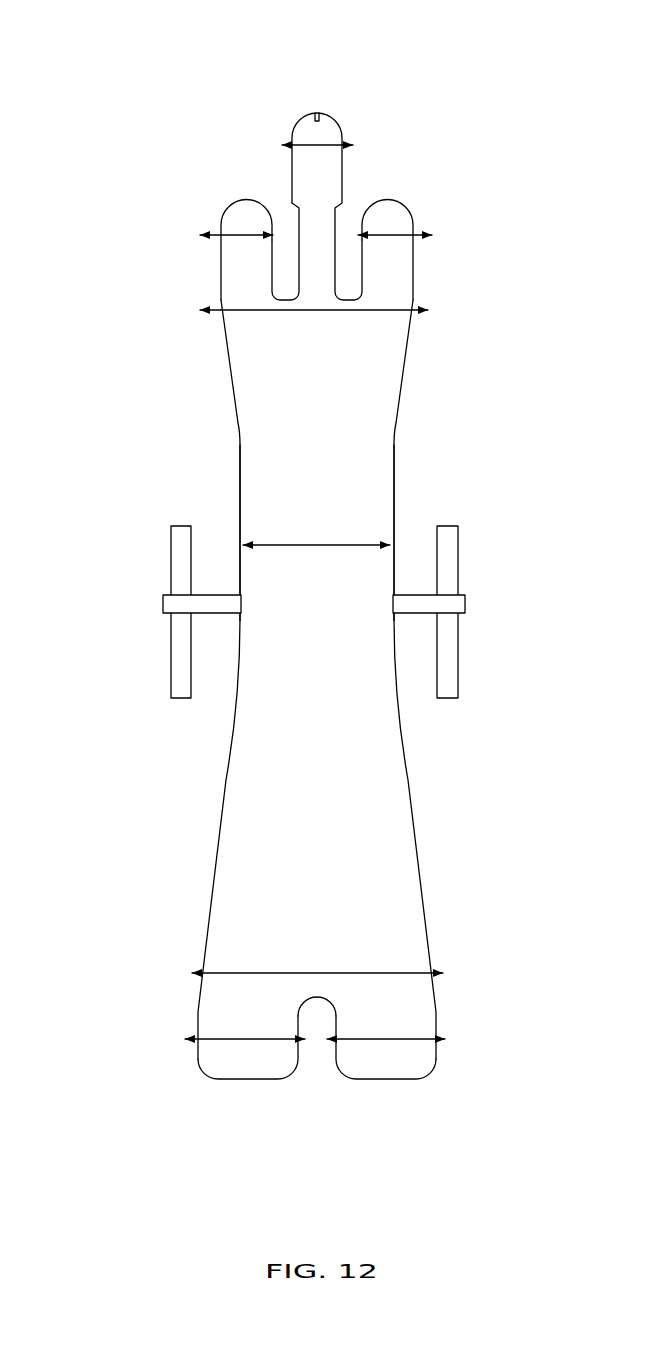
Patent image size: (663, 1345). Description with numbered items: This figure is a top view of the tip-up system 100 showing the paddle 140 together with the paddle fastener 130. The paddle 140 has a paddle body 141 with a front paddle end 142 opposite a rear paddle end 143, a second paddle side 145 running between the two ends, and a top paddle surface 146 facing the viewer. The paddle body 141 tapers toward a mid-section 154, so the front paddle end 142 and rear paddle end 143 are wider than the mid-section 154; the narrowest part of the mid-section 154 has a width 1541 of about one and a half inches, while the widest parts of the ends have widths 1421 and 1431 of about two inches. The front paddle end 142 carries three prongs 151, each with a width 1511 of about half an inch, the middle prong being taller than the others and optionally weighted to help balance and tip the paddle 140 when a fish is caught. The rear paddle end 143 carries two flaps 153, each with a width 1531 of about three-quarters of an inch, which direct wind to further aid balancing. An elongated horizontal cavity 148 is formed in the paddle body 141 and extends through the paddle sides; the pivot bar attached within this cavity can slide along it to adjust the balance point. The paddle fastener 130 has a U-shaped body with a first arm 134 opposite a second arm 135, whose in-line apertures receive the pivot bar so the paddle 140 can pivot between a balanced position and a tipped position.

The connector assembly 100 is at (400, 80).
The paddle fastener 130 is at (475, 508).
The first arm 134 is at (452, 598).
The second arm 135 is at (176, 548).
The paddle 140 is at (173, 178).
The paddle body 141 is at (368, 780).
The front paddle end 142 is at (333, 130).
The rear paddle end 143 is at (365, 1067).
The second paddle side 145 is at (240, 798).
The top paddle surface 146 is at (385, 875).
The elongated horizontal cavity 148 is at (219, 598).
The prongs 151 is at (305, 126).
The flaps 153 is at (231, 1066).
The mid-section 154 is at (293, 513).
The width 1421 is at (268, 312).
The width 1431 is at (248, 972).
The width 1511 is at (318, 147).
The width 1531 is at (217, 1038).
The width 1541 is at (347, 545).